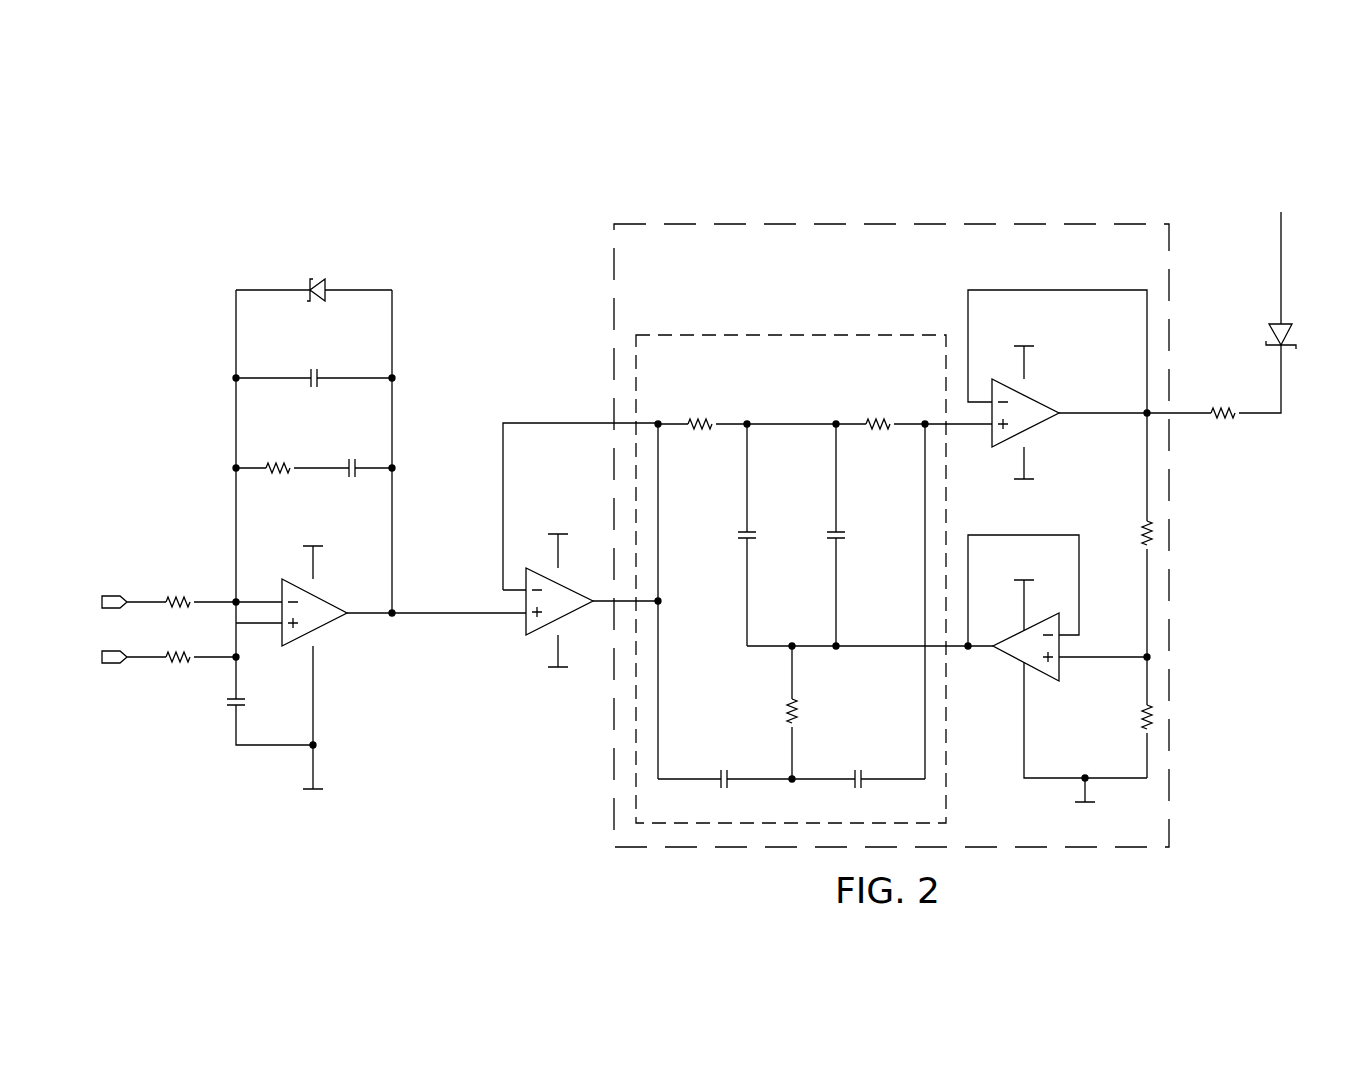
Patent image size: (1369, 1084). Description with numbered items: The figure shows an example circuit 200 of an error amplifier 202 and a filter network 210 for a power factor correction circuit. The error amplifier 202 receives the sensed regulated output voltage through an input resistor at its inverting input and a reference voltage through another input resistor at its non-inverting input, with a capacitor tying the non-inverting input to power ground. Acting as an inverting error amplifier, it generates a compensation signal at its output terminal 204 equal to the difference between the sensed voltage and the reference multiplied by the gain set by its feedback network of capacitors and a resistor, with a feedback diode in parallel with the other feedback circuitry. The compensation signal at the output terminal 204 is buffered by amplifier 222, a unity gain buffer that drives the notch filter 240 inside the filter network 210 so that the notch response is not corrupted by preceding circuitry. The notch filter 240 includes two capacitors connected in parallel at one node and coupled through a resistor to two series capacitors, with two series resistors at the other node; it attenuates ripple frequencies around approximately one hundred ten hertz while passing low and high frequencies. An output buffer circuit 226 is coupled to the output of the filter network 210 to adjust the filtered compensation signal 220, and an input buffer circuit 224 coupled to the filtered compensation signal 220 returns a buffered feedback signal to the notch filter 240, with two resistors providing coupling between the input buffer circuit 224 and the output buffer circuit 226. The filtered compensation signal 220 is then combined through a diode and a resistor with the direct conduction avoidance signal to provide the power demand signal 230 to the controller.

The circuit 200 is at (704, 470).
The error amplifier 202 is at (331, 630).
The output terminal 204 is at (372, 610).
The filter network 210 is at (1000, 222).
The filtered compensation signal 220 is at (1186, 416).
The amplifier 222 is at (523, 626).
The input buffer circuit 224 is at (1012, 660).
The output buffer circuit 226 is at (1044, 400).
The power demand signal 230 is at (1284, 257).
The notch filter 240 is at (750, 334).